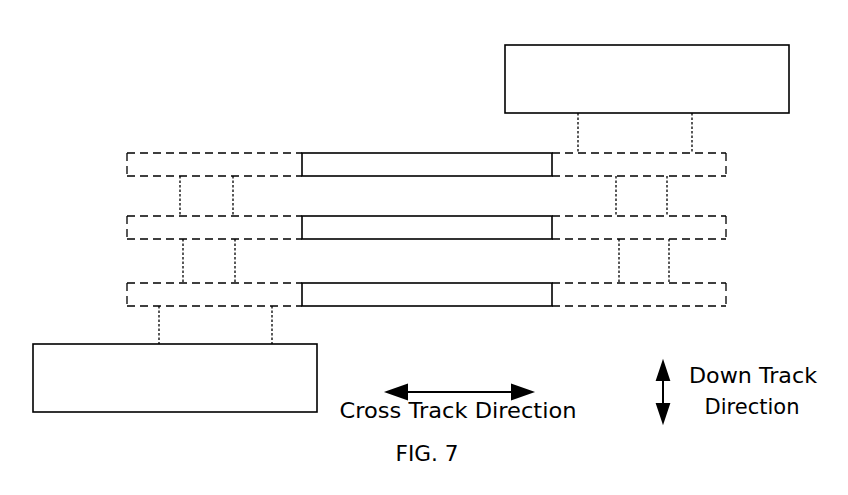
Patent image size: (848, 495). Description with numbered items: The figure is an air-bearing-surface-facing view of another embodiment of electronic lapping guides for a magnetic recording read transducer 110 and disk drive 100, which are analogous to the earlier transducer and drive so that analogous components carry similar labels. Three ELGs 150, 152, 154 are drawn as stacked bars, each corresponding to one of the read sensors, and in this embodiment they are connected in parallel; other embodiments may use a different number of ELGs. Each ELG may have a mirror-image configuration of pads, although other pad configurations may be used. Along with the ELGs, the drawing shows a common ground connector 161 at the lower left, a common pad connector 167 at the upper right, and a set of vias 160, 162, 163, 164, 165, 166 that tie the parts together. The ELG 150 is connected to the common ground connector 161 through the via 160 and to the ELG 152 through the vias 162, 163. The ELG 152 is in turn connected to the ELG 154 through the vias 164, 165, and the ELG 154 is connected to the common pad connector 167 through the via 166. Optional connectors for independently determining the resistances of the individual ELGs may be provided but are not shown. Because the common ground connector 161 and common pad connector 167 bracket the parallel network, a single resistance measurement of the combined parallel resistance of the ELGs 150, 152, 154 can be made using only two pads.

The disk drive 100 is at (480, 40).
The magnetic recording read transducer 110 is at (426, 229).
The ELG 150 is at (427, 294).
The ELG 152 is at (427, 227).
The ELG 154 is at (427, 164).
The via 160 is at (215, 325).
The common ground connector 161 is at (175, 378).
The via 162 is at (644, 261).
The via 163 is at (209, 261).
The via 164 is at (206, 196).
The via 165 is at (641, 196).
The via 166 is at (635, 133).
The common pad connector 167 is at (647, 79).